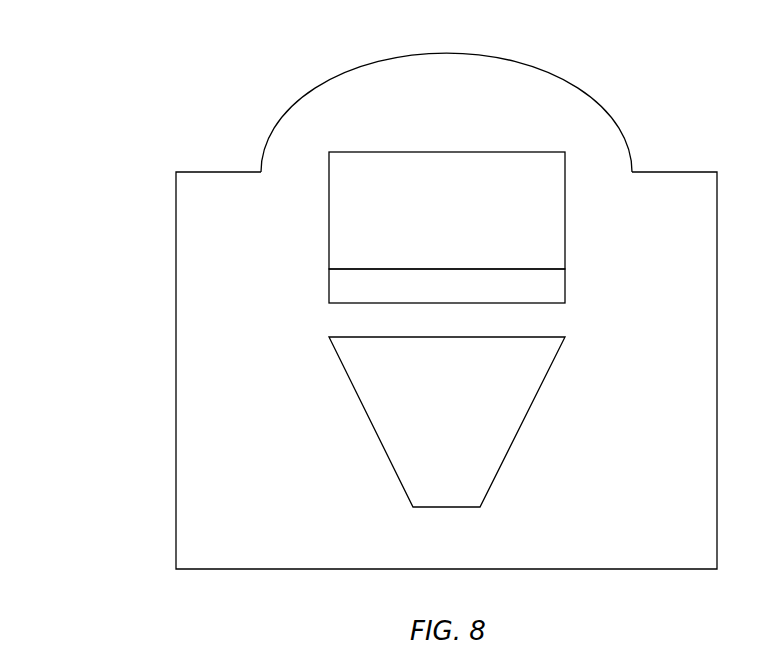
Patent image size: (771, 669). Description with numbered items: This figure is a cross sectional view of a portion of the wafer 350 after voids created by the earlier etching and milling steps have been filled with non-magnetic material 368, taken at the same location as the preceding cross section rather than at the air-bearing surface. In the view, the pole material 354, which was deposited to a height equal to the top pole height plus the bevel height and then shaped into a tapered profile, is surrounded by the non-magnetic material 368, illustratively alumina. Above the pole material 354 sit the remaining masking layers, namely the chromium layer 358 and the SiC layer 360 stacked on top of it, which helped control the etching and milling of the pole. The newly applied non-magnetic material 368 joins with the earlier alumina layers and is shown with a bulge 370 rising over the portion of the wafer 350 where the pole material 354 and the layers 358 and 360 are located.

The wafer 350 is at (190, 138).
The pole material 354 is at (468, 432).
The layer 358 is at (470, 296).
The layer 360 is at (470, 222).
The non-magnetic material 368 is at (202, 342).
The bulge 370 is at (372, 83).